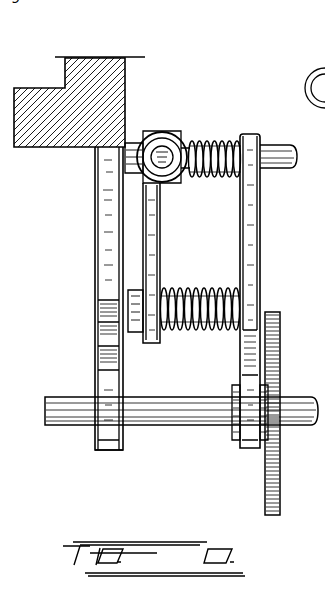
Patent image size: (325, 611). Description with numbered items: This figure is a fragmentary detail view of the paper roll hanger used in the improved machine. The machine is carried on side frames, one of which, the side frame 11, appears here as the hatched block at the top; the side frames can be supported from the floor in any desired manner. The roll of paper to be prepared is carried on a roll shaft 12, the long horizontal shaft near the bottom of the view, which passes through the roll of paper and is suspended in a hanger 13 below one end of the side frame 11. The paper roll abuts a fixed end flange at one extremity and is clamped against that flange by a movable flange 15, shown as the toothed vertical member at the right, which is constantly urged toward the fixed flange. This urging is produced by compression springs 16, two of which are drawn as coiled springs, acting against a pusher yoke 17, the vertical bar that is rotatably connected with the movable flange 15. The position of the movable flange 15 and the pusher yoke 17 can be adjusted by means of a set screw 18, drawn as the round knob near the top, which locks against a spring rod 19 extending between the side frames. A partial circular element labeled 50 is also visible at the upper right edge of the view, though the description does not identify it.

The side frame 11 is at (96, 78).
The roll shaft 12 is at (190, 426).
The hanger 13 is at (108, 283).
The movable flange 15 is at (278, 370).
The compression spring 16 is at (200, 141).
The pusher yoke 17 is at (255, 260).
The set screw 18 is at (163, 131).
The spring rod 19 is at (131, 142).
The disc 50 is at (324, 57).